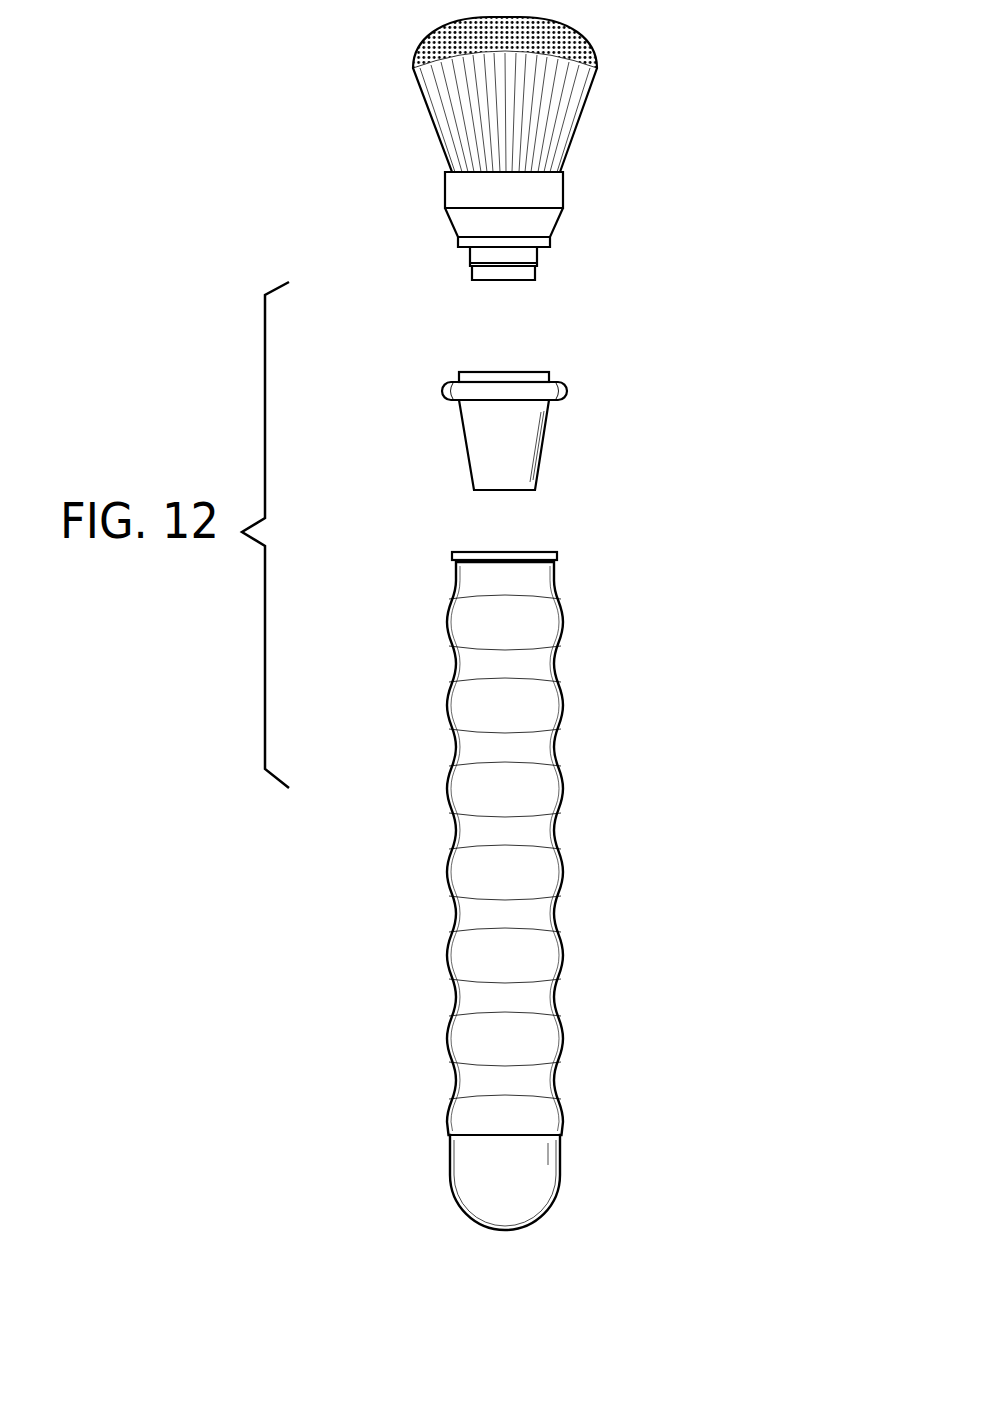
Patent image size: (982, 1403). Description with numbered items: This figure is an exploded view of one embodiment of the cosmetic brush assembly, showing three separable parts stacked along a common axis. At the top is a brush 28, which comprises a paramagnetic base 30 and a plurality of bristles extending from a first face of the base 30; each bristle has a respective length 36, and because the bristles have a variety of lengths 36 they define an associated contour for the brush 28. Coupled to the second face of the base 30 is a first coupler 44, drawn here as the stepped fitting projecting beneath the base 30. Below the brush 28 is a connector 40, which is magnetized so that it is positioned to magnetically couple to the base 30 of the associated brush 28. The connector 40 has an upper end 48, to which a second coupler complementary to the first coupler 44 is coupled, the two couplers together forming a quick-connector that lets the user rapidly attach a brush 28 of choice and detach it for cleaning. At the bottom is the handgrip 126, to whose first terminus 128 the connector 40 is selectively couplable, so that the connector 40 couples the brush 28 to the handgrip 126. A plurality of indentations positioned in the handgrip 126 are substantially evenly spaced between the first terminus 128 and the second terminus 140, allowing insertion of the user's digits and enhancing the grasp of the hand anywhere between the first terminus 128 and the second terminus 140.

The brush 28 is at (515, 94).
The length 36 is at (565, 107).
The base 30 is at (548, 190).
The first coupler 44 is at (548, 253).
The upper end 48 is at (512, 363).
The connector 40 is at (558, 398).
The first terminus 128 is at (570, 551).
The handgrip 126 is at (589, 919).
The second terminus 140 is at (513, 1246).